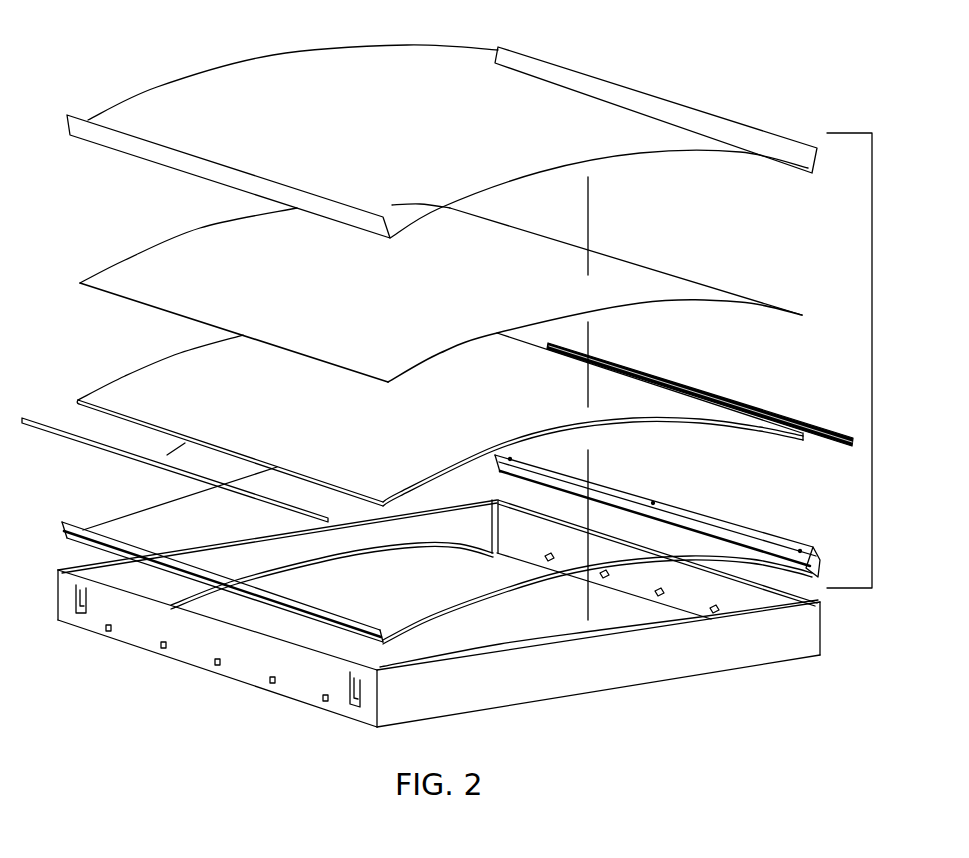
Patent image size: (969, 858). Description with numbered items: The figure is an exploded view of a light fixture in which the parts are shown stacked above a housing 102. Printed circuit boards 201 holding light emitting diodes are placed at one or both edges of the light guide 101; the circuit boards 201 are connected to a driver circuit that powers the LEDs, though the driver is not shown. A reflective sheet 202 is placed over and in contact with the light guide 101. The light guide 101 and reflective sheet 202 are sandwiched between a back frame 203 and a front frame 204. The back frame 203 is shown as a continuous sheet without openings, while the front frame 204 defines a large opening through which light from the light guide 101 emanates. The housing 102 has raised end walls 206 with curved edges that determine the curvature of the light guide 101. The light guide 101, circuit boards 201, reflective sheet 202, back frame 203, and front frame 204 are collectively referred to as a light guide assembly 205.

The light guide 101 is at (125, 383).
The housing 102 is at (143, 633).
The printed circuit boards 201 is at (93, 447).
The reflective sheet 202 is at (727, 297).
The back frame 203 is at (727, 125).
The front frame 204 is at (743, 528).
The light guide assembly 205 is at (872, 338).
The raised end walls 206 is at (328, 570).